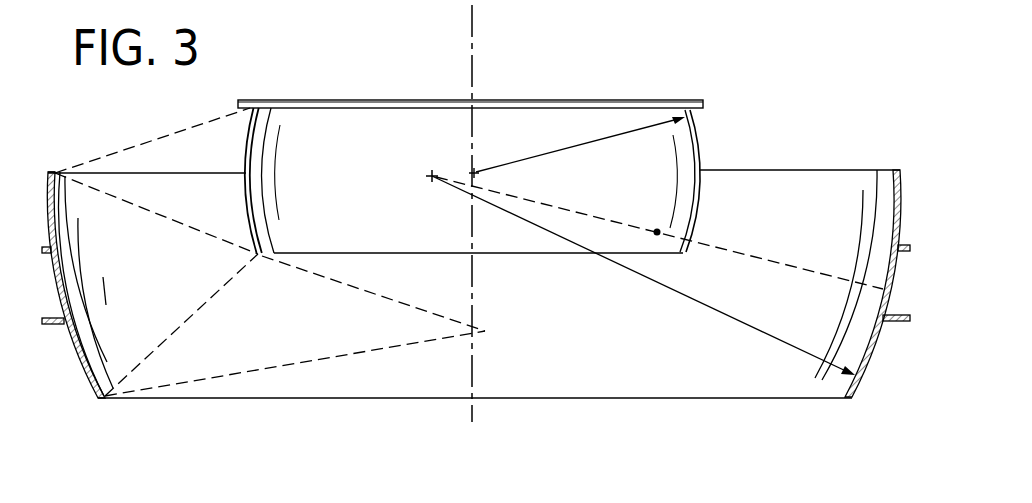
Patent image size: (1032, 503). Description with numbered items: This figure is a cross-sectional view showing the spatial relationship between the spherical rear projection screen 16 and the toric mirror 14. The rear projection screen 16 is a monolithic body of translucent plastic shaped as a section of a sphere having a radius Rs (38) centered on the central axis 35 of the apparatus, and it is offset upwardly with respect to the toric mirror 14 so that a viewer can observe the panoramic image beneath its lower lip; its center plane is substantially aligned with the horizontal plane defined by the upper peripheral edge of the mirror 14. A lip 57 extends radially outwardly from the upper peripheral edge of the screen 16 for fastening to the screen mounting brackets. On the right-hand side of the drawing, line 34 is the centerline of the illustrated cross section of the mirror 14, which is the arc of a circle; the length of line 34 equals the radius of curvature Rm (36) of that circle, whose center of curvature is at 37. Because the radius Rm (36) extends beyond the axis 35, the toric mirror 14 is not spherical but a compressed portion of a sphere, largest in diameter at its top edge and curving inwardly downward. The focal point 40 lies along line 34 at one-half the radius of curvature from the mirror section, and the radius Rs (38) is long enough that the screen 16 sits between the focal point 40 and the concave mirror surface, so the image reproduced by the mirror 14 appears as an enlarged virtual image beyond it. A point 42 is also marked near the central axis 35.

The toric mirror 14 is at (893, 250).
The spherical rear projection screen 16 is at (699, 150).
The centerline of mirror cross section 34 is at (745, 258).
The central axis 35 is at (473, 38).
The radius of curvature Rm 36 is at (690, 302).
The center of curvature 37 is at (432, 176).
The radius of curvature Rs 38 is at (615, 137).
The focal point 40 is at (655, 236).
The center of curvature of secondary mirror 42 is at (474, 173).
The lip 57 is at (703, 100).